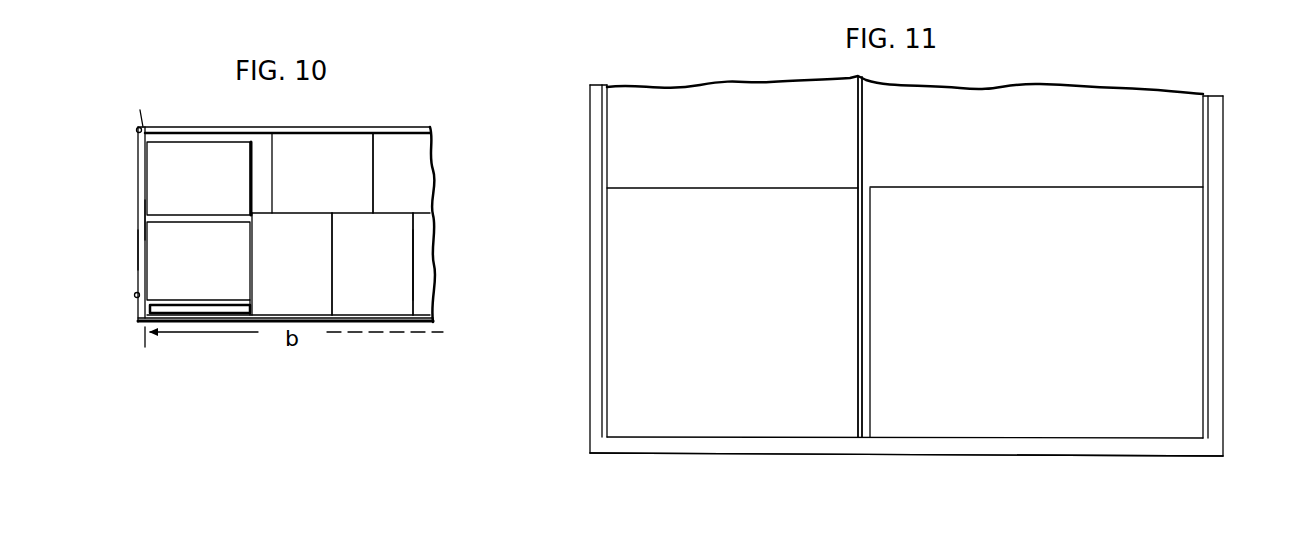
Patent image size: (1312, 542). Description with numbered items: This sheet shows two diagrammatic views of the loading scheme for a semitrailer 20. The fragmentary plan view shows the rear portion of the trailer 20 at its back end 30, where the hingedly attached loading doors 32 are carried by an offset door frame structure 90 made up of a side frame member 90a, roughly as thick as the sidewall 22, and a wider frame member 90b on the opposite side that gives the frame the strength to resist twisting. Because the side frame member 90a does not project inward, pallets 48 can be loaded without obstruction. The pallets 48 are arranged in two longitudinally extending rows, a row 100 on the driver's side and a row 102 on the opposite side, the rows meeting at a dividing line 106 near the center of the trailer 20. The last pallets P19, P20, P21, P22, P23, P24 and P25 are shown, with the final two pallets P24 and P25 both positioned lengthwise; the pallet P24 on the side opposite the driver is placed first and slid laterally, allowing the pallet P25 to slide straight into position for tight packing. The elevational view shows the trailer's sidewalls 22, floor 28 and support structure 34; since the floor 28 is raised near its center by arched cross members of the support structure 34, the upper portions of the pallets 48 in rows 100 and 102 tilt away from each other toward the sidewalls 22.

In FIG. 10, the semitrailer 20 is at (427, 124).
In FIG. 11, the semitrailer 20 is at (601, 9).
In FIG. 10, the sidewall 22 is at (365, 125).
In FIG. 11, the sidewall 22 is at (520, 2).
In FIG. 11, the floor 28 is at (927, 429).
In FIG. 10, the back end 30 is at (137, 250).
In FIG. 10, the loading door 32 is at (138, 241).
In FIG. 11, the support structure 34 is at (996, 456).
In FIG. 10, the pallet 48 is at (425, 233).
In FIG. 11, the pallet 48 is at (650, 0).
In FIG. 10, the offset door frame structure 90 is at (135, 0).
In FIG. 10, the side frame member 90a is at (139, 106).
In FIG. 10, the frame member 90b is at (125, 360).
In FIG. 10, the row 100 is at (438, 167).
In FIG. 11, the row 100 is at (768, 127).
In FIG. 10, the row 102 is at (439, 245).
In FIG. 11, the row 102 is at (818, 0).
In FIG. 11, the dividing line 106 is at (864, 186).
In FIG. 10, the pallet P19 is at (423, 270).
In FIG. 10, the pallet P20 is at (428, 182).
In FIG. 10, the pallet P21 is at (393, 276).
In FIG. 10, the pallet P22 is at (343, 182).
In FIG. 10, the pallet P23 is at (310, 276).
In FIG. 10, the pallet P24 is at (216, 276).
In FIG. 11, the pallet P24 is at (1055, 339).
In FIG. 10, the pallet P25 is at (216, 184).
In FIG. 11, the pallet P25 is at (757, 337).